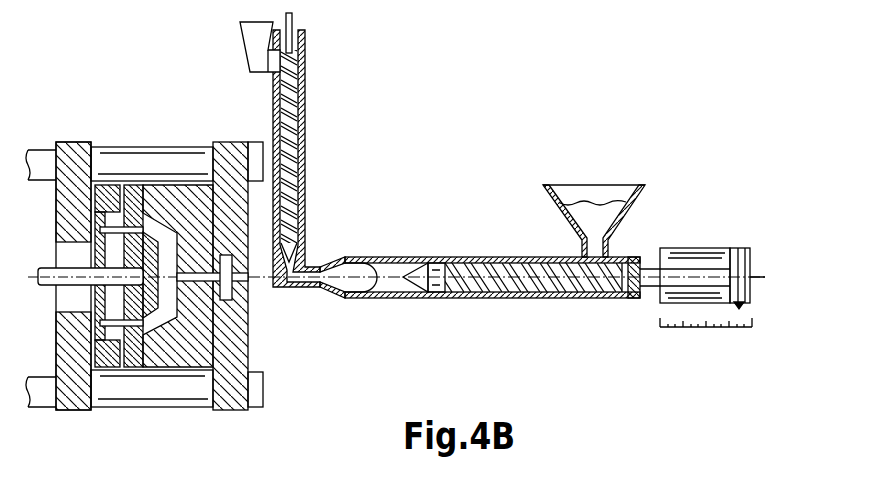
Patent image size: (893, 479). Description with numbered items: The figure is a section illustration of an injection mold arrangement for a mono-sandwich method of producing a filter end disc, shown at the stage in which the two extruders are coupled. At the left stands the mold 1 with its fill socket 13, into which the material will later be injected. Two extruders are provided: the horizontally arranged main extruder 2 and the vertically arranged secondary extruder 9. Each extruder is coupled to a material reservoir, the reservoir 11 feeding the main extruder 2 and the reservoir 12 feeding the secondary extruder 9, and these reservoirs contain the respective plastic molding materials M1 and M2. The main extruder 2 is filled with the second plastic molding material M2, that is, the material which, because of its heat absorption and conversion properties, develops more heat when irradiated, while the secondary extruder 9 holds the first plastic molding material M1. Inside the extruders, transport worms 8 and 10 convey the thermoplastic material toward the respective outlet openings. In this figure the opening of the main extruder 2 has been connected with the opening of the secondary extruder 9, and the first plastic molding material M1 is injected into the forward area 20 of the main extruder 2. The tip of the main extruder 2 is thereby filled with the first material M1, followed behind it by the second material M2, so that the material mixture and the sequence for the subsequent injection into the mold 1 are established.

The mold 1 is at (158, 122).
The main extruder 2 is at (392, 257).
The transport worm 8 is at (497, 254).
The secondary extruder 9 is at (305, 157).
The transport worm 10 is at (303, 117).
The material reservoir 11 is at (574, 193).
The material reservoir 12 is at (240, 40).
The fill socket 13 is at (251, 292).
The forward area 20 is at (300, 315).
The first plastic molding material M1 is at (258, 66).
The second plastic molding material M2 is at (610, 212).